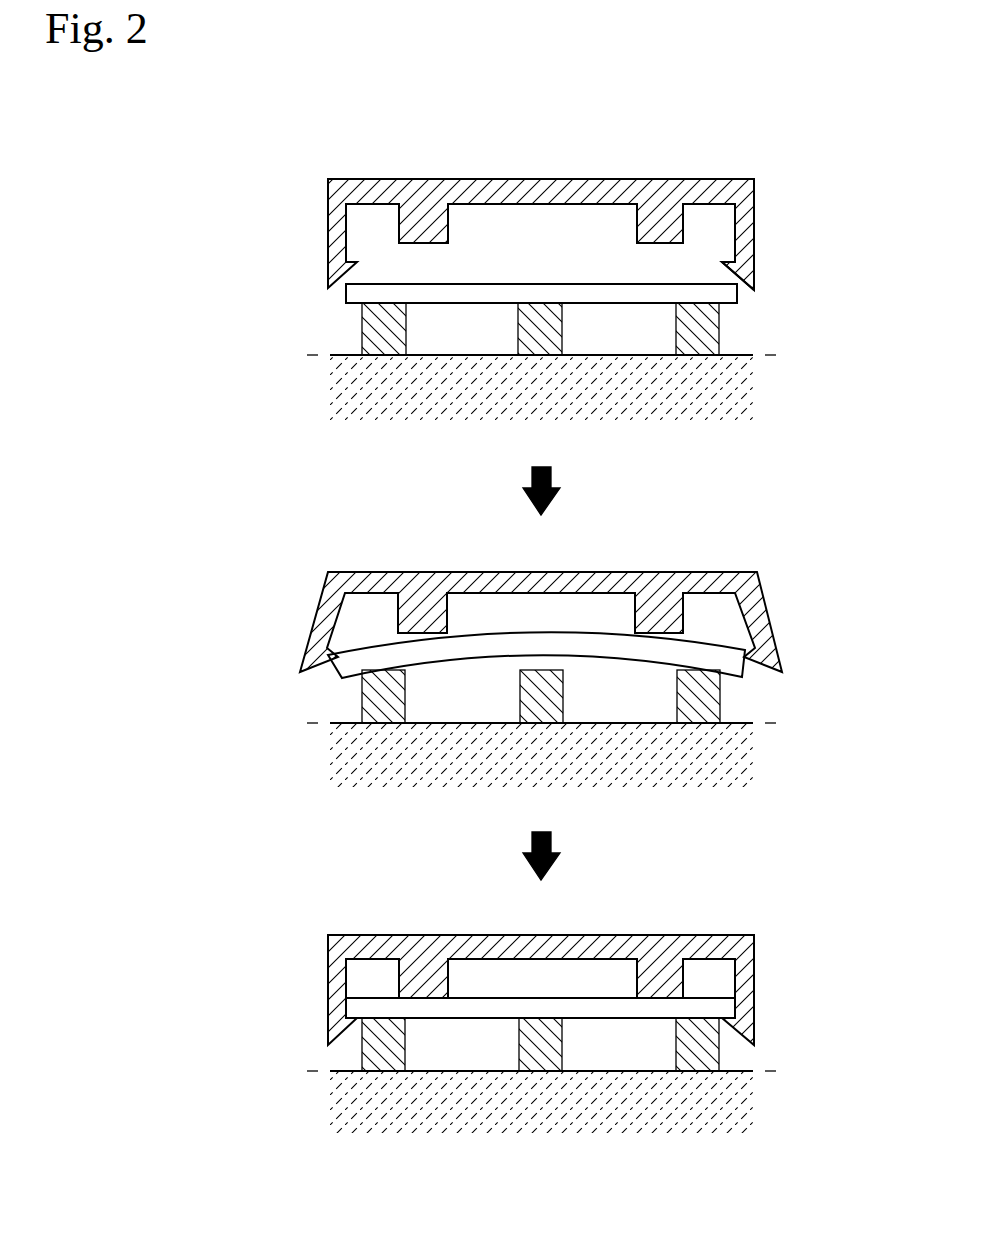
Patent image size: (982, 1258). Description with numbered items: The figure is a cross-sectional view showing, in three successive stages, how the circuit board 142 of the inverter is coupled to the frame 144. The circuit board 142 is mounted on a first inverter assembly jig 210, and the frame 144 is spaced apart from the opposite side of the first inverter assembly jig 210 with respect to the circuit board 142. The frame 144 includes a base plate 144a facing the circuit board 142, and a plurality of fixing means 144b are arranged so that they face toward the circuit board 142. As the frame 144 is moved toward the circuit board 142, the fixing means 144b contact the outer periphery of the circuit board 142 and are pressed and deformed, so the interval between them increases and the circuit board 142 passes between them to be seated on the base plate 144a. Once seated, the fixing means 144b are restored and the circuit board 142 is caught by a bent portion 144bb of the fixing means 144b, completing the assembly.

The frame 144 is at (313, 232).
The base plate 144a is at (553, 188).
The fixing means 144b is at (747, 232).
The bent portion 144bb is at (748, 253).
The circuit board 142 is at (333, 298).
The first inverter assembly jig 210 is at (345, 337).